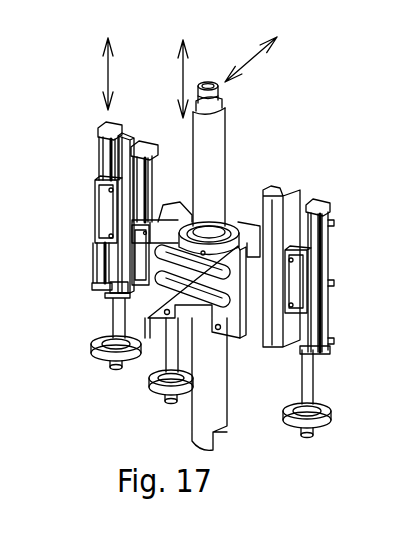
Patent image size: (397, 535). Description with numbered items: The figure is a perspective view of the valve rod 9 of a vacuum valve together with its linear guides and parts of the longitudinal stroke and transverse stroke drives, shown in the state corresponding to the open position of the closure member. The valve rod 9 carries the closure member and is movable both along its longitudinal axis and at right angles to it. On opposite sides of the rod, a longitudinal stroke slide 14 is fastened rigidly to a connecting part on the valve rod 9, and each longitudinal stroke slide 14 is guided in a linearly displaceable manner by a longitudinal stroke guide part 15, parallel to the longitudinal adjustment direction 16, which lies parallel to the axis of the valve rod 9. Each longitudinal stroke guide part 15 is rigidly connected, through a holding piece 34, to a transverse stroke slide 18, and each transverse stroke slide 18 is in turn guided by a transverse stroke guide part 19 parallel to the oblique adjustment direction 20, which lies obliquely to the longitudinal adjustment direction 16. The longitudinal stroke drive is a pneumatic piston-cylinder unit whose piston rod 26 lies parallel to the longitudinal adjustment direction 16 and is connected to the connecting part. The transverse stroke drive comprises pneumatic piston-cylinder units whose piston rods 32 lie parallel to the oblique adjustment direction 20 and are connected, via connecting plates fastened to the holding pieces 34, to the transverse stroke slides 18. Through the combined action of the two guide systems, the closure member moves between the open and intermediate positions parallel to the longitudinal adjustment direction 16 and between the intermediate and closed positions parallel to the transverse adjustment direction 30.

The valve rod 9 is at (218, 137).
The longitudinal stroke slide 14 is at (143, 243).
The longitudinal stroke guide part 15 is at (148, 165).
The longitudinal adjustment direction 16 is at (182, 73).
The transverse stroke slide 18 is at (105, 203).
The transverse stroke guide part 19 is at (93, 261).
The oblique adjustment direction 20 is at (107, 68).
The piston rod 26 is at (170, 350).
The transverse adjustment direction 30 is at (255, 58).
The piston rods 32 is at (119, 325).
The holding piece 34 is at (119, 271).